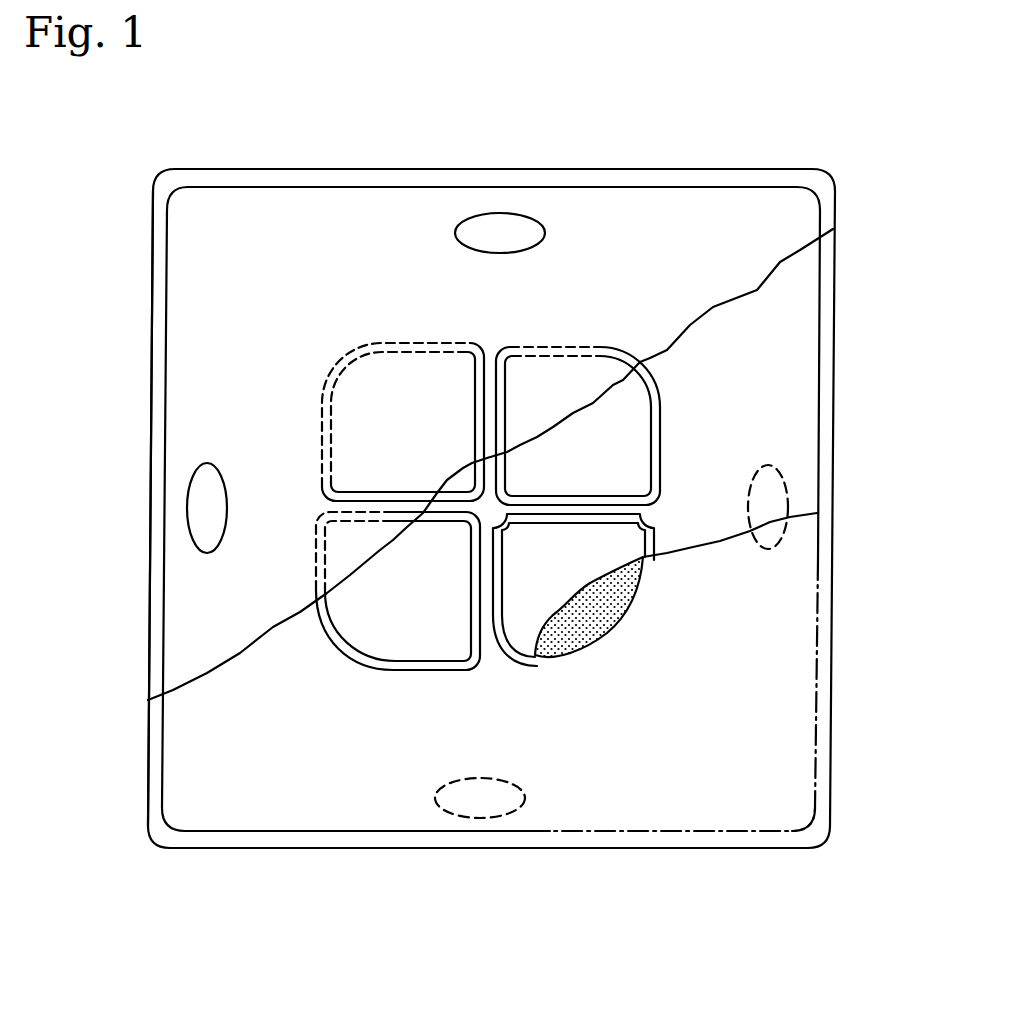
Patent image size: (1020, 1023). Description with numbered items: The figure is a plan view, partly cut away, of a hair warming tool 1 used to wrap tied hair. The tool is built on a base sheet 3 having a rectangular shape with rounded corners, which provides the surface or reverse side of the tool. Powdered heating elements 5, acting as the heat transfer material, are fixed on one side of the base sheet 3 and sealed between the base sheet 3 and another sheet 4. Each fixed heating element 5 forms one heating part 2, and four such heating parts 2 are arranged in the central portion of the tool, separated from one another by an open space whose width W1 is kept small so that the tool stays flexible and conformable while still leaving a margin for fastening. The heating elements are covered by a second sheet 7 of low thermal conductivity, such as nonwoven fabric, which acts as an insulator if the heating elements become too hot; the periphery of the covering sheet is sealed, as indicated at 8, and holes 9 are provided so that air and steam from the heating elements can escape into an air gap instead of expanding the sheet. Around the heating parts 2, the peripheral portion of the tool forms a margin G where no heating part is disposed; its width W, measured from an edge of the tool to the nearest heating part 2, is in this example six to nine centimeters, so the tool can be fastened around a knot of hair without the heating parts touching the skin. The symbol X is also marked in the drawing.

The hair warming tool 1 is at (870, 203).
The heating part 2 is at (442, 423).
The base sheet 3 is at (777, 732).
The another sheet 4 is at (633, 480).
The powdered heating element 5 is at (596, 636).
The second sheet 7 is at (361, 211).
The peripheral seal 8 is at (152, 655).
The holes 9 is at (507, 226).
The margin G is at (222, 402).
The width of the margin W is at (447, 171).
The width between adjacent heating parts W1 is at (413, 308).
The distance X is at (80, 475).